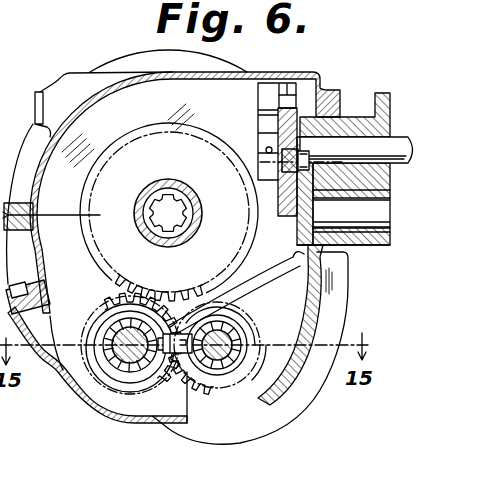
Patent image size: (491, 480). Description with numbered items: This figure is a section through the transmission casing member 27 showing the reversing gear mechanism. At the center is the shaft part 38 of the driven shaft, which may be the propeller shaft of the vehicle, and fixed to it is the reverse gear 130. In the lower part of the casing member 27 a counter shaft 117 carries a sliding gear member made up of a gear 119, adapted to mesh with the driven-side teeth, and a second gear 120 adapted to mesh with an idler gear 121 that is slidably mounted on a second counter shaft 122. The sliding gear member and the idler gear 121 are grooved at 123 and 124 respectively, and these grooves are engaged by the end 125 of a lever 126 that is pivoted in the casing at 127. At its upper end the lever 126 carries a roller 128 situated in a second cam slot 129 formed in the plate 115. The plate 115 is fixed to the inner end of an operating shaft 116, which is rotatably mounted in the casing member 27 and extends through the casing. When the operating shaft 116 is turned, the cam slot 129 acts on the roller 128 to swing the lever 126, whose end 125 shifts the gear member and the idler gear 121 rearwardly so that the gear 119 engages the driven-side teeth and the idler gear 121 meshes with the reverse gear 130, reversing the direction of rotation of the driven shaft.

The casing member 27 is at (311, 73).
The shaft part 38 is at (184, 244).
The plate 115 is at (287, 90).
The operating shaft 116 is at (355, 143).
The counter shaft 117 is at (217, 358).
The gear 119 is at (248, 376).
The second gear 120 is at (268, 324).
The idler gear 121 is at (95, 336).
The second counter shaft 122 is at (118, 339).
The groove 123 is at (240, 336).
The groove 124 is at (117, 370).
The end of lever 125 is at (157, 386).
The lever 126 is at (270, 270).
The pivot 127 is at (373, 222).
The roller 128 is at (290, 181).
The second cam slot 129 is at (290, 187).
The reverse gear 130 is at (100, 242).